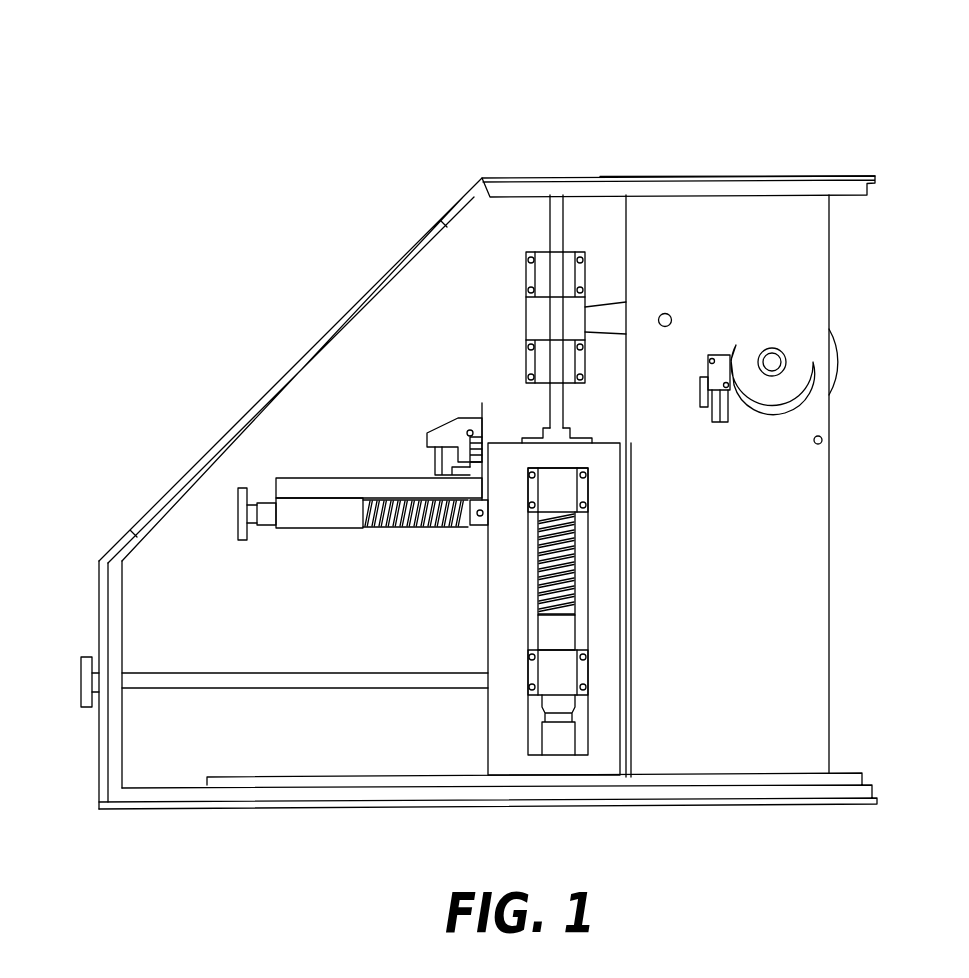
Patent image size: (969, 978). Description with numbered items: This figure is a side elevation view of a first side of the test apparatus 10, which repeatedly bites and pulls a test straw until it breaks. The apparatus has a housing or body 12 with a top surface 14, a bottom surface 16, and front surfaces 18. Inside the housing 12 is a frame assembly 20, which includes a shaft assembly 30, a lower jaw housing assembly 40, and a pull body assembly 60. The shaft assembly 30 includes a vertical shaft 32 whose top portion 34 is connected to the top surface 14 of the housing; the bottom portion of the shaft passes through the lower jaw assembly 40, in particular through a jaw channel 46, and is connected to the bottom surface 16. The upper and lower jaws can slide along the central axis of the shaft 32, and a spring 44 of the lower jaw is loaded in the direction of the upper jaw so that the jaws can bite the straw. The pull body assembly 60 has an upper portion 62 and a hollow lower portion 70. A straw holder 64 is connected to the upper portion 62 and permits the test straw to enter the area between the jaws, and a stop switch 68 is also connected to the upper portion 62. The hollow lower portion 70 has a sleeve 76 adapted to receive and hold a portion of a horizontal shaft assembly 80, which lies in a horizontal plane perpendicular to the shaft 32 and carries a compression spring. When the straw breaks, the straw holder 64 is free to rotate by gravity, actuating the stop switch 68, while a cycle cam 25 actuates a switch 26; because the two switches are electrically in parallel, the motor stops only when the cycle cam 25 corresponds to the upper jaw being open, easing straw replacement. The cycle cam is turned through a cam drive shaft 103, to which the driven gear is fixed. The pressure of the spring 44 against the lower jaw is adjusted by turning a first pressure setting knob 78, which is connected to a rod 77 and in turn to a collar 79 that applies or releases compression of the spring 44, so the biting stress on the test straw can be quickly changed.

The test apparatus 10 is at (678, 113).
The housing 12 is at (537, 177).
The top surface 14 is at (762, 188).
The bottom surface 16 is at (660, 797).
The front surfaces 18 is at (195, 470).
The frame assembly 20 is at (771, 262).
The cycle cam 25 is at (804, 327).
The switch 26 is at (734, 415).
The shaft assembly 30 is at (526, 305).
The shaft 32 is at (564, 405).
The top portion 34 is at (549, 222).
The lower jaw housing assembly 40 is at (573, 575).
The spring 44 is at (578, 545).
The jaw channel 46 is at (536, 605).
The pull body assembly 60 is at (236, 517).
The upper portion 62 is at (285, 478).
The straw holder 64 is at (440, 416).
The stop switch 68 is at (462, 452).
The hollow lower portion 70 is at (292, 534).
The sleeve 76 is at (340, 509).
The rod 77 is at (383, 673).
The first pressure setting knob 78 is at (81, 708).
The collar 79 is at (559, 633).
The shaft assembly 80 is at (417, 530).
The cam drive shaft 103 is at (776, 362).